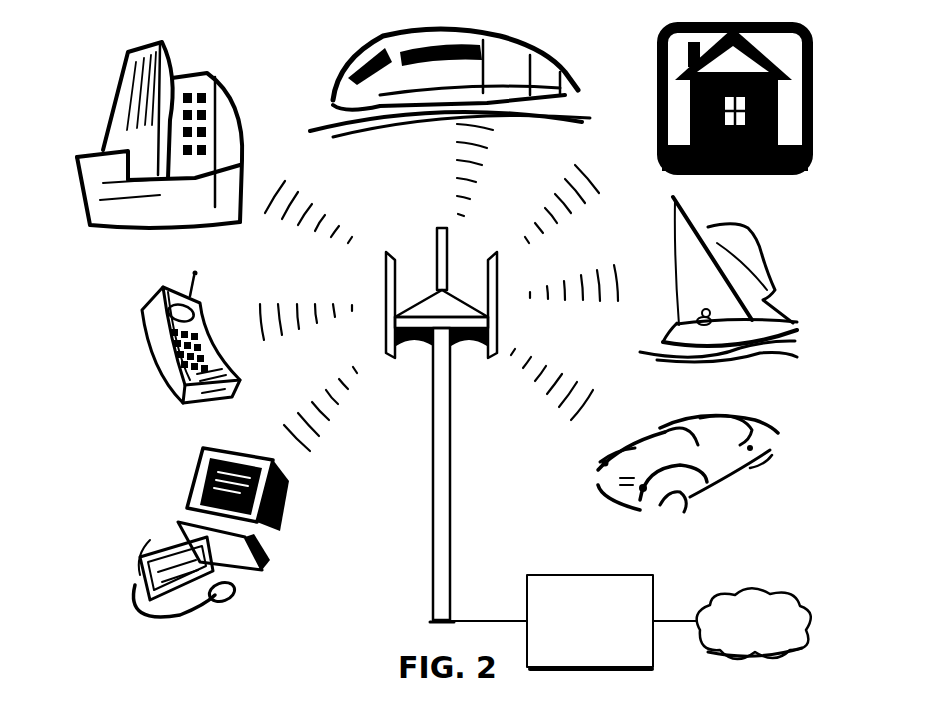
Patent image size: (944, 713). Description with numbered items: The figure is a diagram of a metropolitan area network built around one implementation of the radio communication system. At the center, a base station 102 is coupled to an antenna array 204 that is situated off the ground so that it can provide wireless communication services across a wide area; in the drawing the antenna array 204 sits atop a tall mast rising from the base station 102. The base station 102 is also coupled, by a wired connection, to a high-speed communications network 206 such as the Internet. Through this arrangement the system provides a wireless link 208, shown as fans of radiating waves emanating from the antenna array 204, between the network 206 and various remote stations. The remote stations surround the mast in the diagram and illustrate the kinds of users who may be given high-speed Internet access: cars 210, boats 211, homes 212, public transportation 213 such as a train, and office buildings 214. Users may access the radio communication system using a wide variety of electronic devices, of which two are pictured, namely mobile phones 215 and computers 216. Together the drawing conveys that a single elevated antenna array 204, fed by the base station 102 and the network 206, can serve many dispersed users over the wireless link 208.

The base station 102 is at (551, 622).
The antenna array 204 is at (432, 477).
The high-speed communications network 206 is at (732, 623).
The wireless link 208 is at (535, 392).
The cars 210 is at (778, 500).
The boats 211 is at (803, 258).
The homes 212 is at (817, 65).
The public transportation 213 is at (543, 35).
The office buildings 214 is at (208, 57).
The mobile phones 215 is at (105, 297).
The computers 216 is at (127, 507).